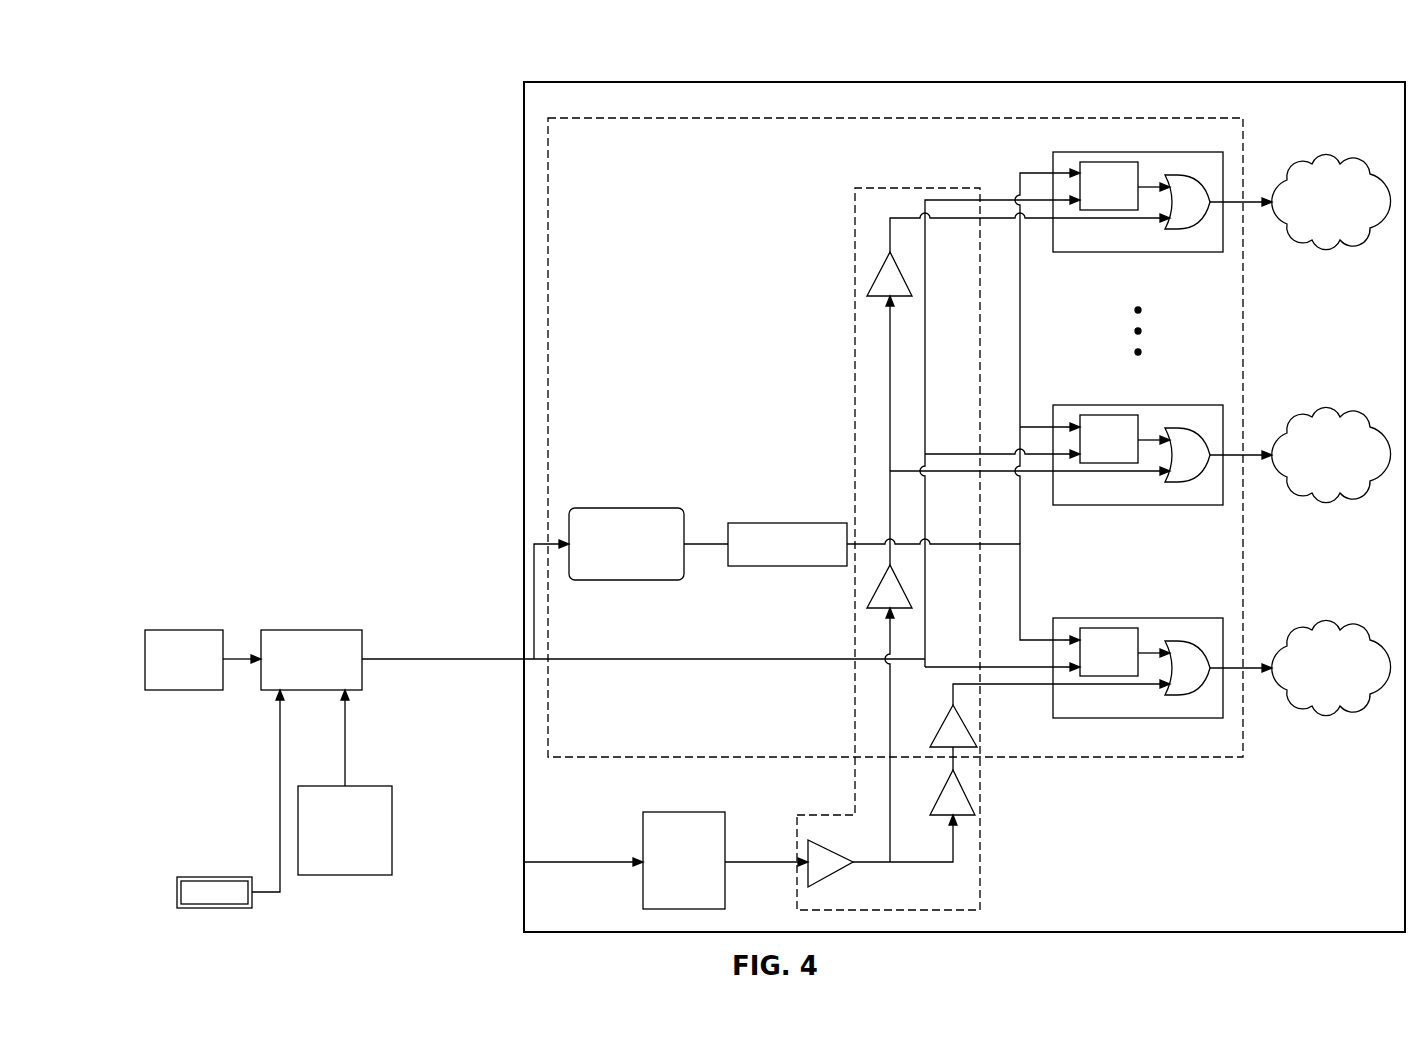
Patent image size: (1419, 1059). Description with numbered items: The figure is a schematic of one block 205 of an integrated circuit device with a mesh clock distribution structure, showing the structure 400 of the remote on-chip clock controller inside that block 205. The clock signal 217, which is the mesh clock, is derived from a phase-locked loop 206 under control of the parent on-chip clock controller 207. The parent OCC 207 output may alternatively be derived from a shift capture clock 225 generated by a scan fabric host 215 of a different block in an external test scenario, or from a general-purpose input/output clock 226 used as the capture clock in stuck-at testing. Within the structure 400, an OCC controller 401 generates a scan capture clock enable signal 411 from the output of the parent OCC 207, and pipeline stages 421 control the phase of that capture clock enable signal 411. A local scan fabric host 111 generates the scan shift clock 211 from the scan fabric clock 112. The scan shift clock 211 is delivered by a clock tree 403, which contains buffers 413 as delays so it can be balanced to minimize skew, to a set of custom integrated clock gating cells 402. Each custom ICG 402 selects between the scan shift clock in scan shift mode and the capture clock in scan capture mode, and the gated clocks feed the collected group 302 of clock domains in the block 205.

The block 205 is at (590, 82).
The structure 400 is at (620, 118).
The custom integrated clock gating cell 402 is at (1120, 152).
The collected group of clock domains 302 is at (1329, 166).
The buffer 413 is at (870, 282).
The OCC controller 401 is at (625, 508).
The pipeline stages 421 is at (787, 523).
The scan capture clock enable signal 411 is at (708, 545).
The clock tree 403 is at (982, 868).
The local scan fabric host 111 is at (712, 812).
The scan fabric clock 112 is at (587, 862).
The scan shift clock 211 is at (745, 862).
The phase-locked loop 206 is at (212, 628).
The parent on-chip clock controller 207 is at (328, 628).
The clock signal 217 is at (512, 655).
The shift capture clock 225 is at (344, 780).
The general-purpose input/output clock 226 is at (215, 877).
The scan fabric host 215 is at (345, 875).